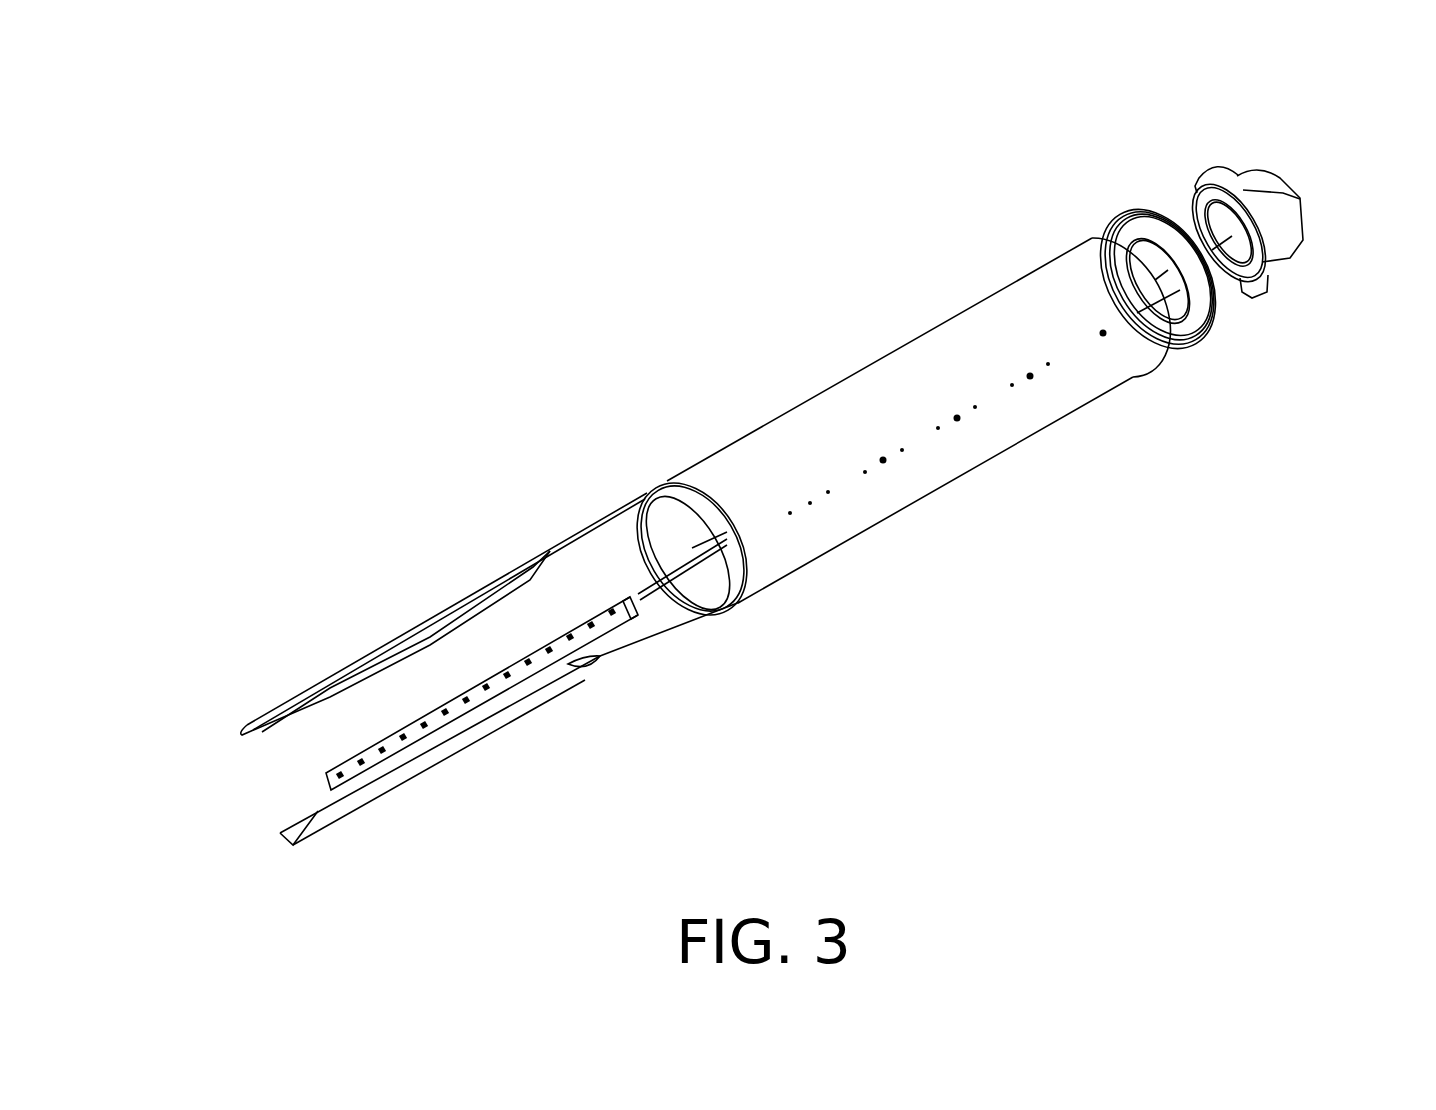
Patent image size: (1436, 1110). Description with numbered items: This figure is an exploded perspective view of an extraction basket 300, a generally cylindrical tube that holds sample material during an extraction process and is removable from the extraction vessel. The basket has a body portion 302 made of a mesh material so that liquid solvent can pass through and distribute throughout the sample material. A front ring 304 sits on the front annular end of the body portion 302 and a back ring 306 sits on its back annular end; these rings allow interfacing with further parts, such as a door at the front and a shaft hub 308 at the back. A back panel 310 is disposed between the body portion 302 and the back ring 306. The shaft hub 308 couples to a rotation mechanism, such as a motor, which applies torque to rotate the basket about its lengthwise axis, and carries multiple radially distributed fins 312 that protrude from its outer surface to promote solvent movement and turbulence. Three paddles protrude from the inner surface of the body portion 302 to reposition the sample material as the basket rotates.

The extraction basket 300 is at (695, 305).
The body portion 302 is at (918, 420).
The front ring 304 is at (652, 495).
The back ring 306 is at (1203, 338).
The shaft hub 308 is at (1297, 210).
The back panel 310 is at (1125, 246).
The fins 312 is at (1200, 172).